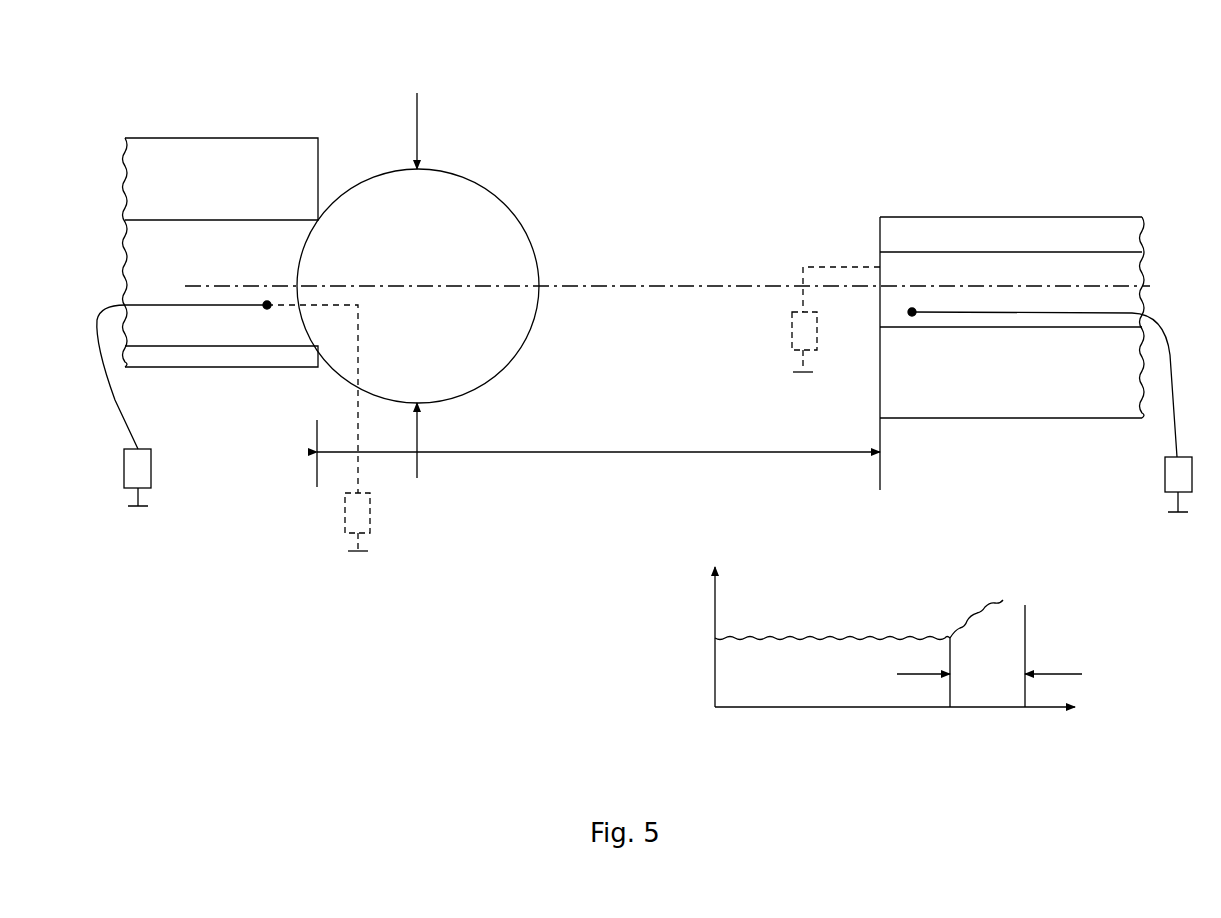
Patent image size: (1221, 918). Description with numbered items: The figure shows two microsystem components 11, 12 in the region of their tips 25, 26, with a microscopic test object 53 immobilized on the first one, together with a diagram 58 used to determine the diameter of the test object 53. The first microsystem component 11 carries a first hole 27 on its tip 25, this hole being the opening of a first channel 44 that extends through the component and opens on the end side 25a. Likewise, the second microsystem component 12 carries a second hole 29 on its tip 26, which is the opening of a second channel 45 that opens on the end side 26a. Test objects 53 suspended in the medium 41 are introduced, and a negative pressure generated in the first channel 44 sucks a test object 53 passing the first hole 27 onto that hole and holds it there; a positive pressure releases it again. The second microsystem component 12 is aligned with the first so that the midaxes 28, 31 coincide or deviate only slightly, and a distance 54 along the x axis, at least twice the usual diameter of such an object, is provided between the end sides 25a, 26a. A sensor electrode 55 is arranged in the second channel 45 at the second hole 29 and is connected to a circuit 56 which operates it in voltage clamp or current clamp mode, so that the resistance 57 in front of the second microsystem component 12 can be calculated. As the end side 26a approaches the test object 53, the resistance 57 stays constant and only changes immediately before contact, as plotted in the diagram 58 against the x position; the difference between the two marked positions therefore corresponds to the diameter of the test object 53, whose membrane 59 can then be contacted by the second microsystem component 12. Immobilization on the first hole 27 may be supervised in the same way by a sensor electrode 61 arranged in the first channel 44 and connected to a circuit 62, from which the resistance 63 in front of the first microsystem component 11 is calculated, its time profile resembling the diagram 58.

The tip 25 is at (204, 128).
The first microsystem component 11 is at (223, 170).
The first hole 27 is at (262, 240).
The sensor electrode 61 is at (422, 135).
The test object 53 is at (435, 242).
The medium 41 is at (681, 194).
The midaxis 28 is at (590, 286).
The second hole 29 is at (890, 263).
The end side 26a is at (872, 240).
The second microsystem component 12 is at (952, 230).
The tip 26 is at (1033, 215).
The second channel 45 is at (1012, 272).
The resistance 57 is at (790, 332).
The midaxis 31 is at (723, 287).
The first channel 44 is at (222, 317).
The end side 25a is at (318, 362).
The circuit 62 is at (130, 472).
The resistance 63 is at (347, 513).
The distance 54 is at (598, 454).
The membrane 59 is at (533, 318).
The sensor electrode 55 is at (915, 315).
The circuit 56 is at (1168, 478).
The diagram 58 is at (848, 622).